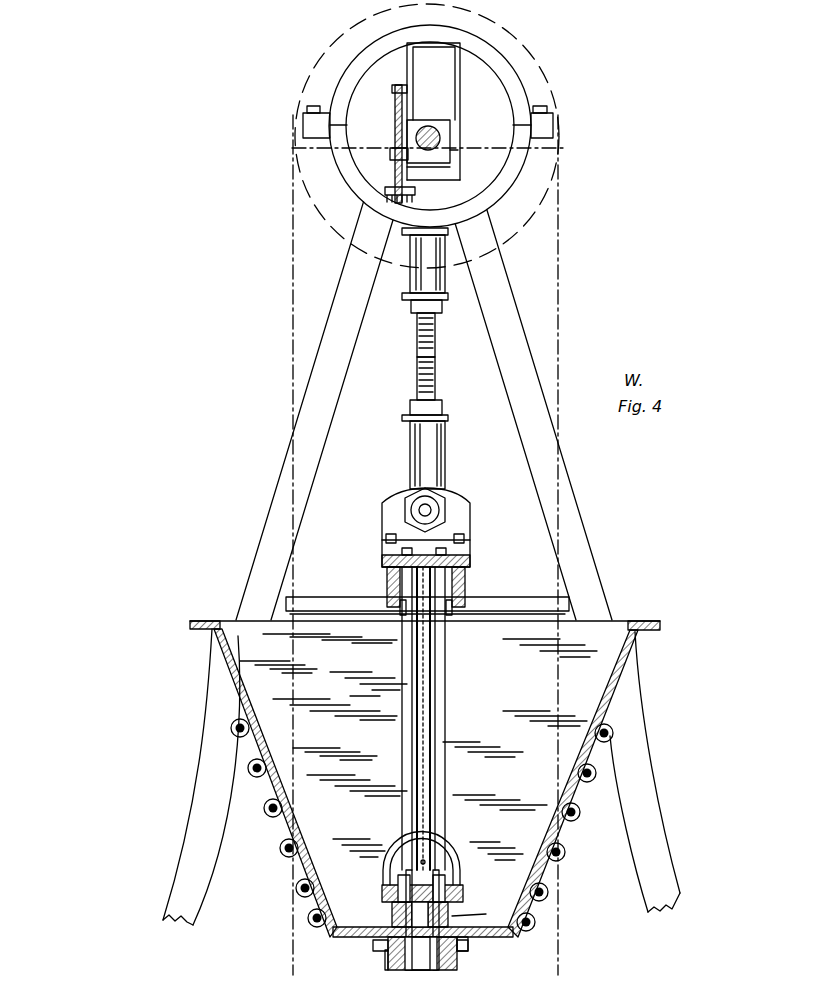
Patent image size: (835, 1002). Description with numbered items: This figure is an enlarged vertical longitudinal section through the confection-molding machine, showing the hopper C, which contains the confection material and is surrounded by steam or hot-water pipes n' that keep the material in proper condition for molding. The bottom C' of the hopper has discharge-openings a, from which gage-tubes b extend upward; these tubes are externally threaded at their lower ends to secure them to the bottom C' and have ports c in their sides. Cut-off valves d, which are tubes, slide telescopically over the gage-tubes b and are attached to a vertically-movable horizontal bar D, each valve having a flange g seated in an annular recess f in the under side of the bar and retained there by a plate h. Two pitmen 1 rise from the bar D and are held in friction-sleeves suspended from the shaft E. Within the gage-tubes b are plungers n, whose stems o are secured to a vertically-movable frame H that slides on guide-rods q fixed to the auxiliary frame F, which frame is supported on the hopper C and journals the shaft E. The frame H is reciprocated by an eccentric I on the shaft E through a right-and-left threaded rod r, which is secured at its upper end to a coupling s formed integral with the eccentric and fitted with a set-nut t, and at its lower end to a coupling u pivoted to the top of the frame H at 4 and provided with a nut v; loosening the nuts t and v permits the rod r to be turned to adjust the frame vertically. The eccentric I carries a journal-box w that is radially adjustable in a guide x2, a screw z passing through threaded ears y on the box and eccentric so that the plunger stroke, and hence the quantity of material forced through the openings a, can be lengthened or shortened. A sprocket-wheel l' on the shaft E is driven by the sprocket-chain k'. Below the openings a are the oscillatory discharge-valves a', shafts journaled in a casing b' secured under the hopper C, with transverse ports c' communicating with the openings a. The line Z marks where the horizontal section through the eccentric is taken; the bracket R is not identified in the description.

The eccentric I is at (444, 126).
The sprocket-wheel l' is at (413, 136).
The section line Z Z is at (425, 148).
The guide x2 is at (442, 100).
The shaft E is at (447, 130).
The screw z is at (394, 106).
The screw-threaded ears y is at (395, 175).
The journal-box w is at (467, 152).
The auxiliary frame F is at (306, 408).
The sprocket-chain k' is at (404, 545).
The coupling s is at (410, 280).
The set-nut t is at (439, 334).
The rod r is at (438, 378).
The nut v is at (442, 410).
The coupling u is at (445, 447).
The pivot of coupling 4 is at (436, 508).
The guide-rods q is at (398, 578).
The frame H is at (470, 578).
The hopper C is at (425, 779).
The support bracket R is at (200, 800).
The steam or hot-water pipes n' is at (422, 825).
The stems o is at (403, 690).
The pitmen 1 is at (431, 766).
The bar D is at (439, 865).
The gage-tubes b is at (419, 854).
The annular recesses f is at (382, 890).
The flange g is at (398, 895).
The plungers n is at (420, 914).
The cut-off valves d is at (392, 912).
The ports c is at (429, 916).
The plate h is at (475, 906).
The discharge-valves a' is at (423, 965).
The discharge-openings a is at (422, 954).
The casing b' is at (369, 972).
The transverse ports c' is at (421, 966).
The hopper bottom C' is at (487, 954).